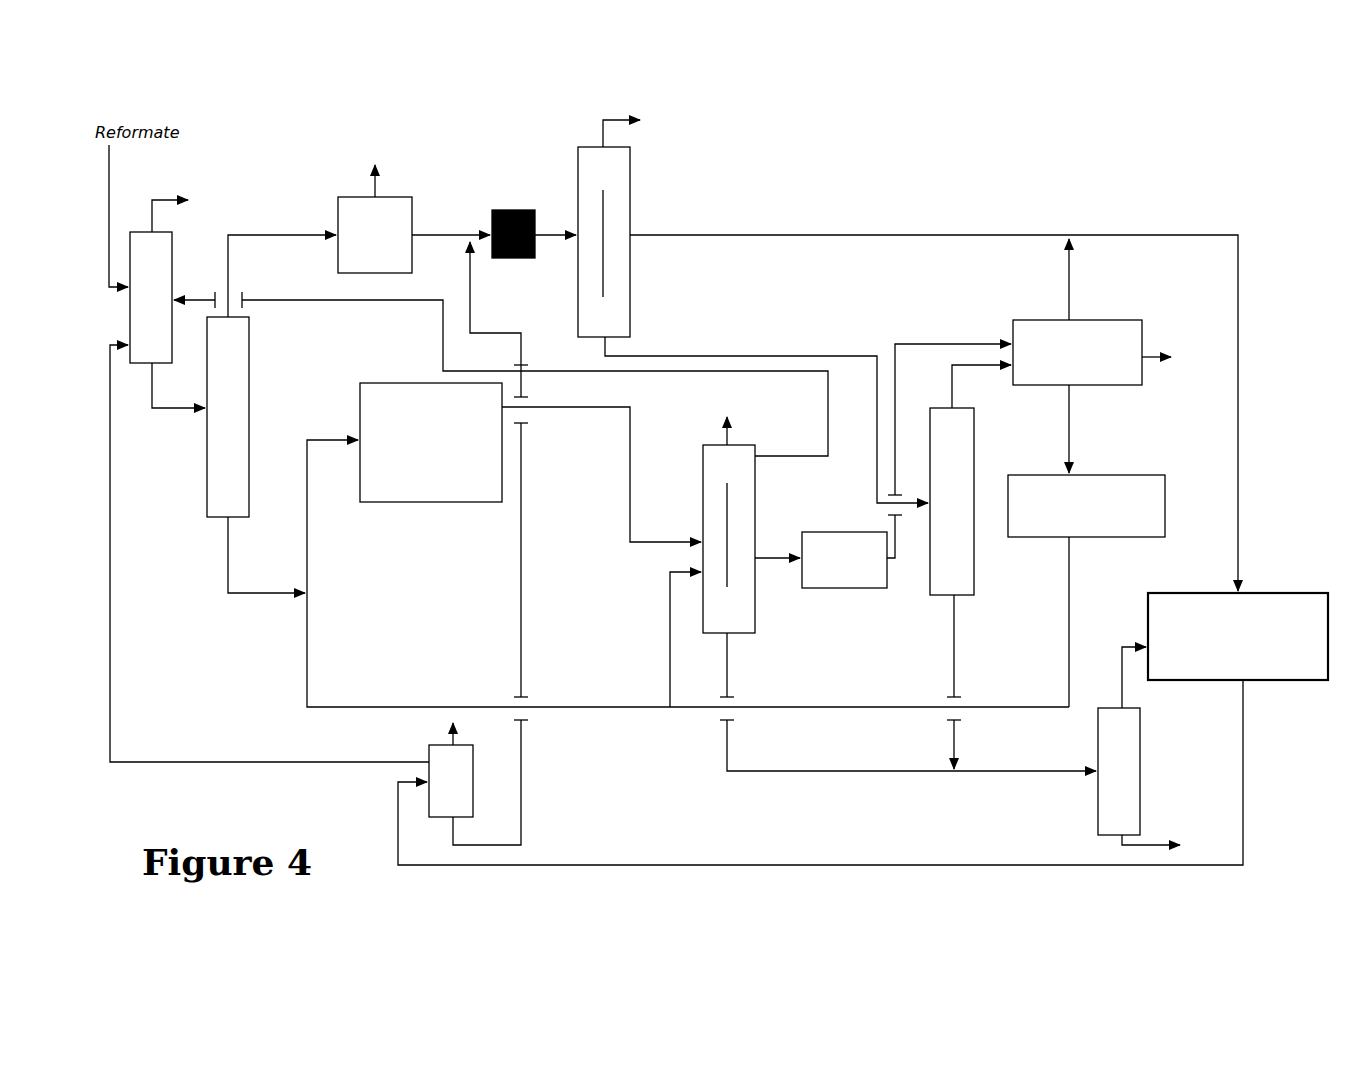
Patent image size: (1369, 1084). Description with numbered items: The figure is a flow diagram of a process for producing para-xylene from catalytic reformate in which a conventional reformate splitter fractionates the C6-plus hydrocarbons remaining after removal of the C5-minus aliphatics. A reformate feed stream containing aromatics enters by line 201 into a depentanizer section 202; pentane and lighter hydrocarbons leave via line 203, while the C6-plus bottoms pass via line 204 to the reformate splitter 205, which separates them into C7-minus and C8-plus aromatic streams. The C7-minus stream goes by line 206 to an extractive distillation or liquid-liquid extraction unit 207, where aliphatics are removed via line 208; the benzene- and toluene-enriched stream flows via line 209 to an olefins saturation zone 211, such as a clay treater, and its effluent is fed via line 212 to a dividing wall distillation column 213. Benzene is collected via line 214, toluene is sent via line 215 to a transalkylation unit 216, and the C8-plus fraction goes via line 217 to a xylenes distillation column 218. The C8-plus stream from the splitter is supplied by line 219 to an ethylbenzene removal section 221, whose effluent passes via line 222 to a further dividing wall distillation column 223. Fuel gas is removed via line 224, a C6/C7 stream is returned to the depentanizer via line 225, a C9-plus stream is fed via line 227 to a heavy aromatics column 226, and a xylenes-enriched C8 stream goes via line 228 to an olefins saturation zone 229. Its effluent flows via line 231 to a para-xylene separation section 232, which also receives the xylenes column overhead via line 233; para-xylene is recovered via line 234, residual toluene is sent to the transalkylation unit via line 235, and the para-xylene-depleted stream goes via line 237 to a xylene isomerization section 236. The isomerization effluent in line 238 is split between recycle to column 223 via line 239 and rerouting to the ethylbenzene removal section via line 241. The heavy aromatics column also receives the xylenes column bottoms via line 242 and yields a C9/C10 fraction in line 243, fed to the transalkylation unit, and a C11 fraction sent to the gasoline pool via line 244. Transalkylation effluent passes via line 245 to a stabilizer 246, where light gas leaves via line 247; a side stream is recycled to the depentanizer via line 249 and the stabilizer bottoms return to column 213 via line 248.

The line 201 is at (127, 216).
The depentanizer section 202 is at (145, 283).
The line 203 is at (170, 204).
The line 204 is at (178, 398).
The reformate splitter 205 is at (249, 358).
The line 206 is at (282, 266).
The extractive distillation or liquid-liquid extraction unit 207 is at (340, 197).
The line 208 is at (395, 181).
The line 209 is at (451, 226).
The olefins saturation zone 211 is at (492, 210).
The line 212 is at (555, 225).
The dividing wall distillation column 213 is at (623, 183).
The line 214 is at (627, 122).
The line 215 is at (934, 403).
The transalkylation unit 216 is at (1253, 593).
The line 217 is at (766, 418).
The xylenes distillation column 218 is at (972, 557).
The line 219 is at (249, 555).
The ethylbenzene removal section 221 is at (422, 493).
The line 222 is at (601, 474).
The dividing wall distillation column 223 is at (748, 598).
The line 224 is at (709, 423).
The line 225 is at (501, 374).
The heavy aromatics column 226 is at (1100, 785).
The line 227 is at (908, 702).
The line 228 is at (777, 570).
The olefins saturation zone 229 is at (830, 532).
The line 231 is at (949, 440).
The para-xylene separation section 232 is at (1107, 320).
The line 233 is at (981, 386).
The line 234 is at (1173, 358).
The line 235 is at (1047, 279).
The xylene isomerization section 236 is at (1133, 475).
The line 237 is at (1087, 429).
The line 238 is at (1087, 622).
The line 239 is at (666, 639).
The line 241 is at (688, 573).
The line 242 is at (969, 682).
The line 243 is at (1127, 668).
The line 244 is at (1151, 833).
The line 245 is at (837, 772).
The stabilizer 246 is at (462, 798).
The line 247 is at (428, 733).
The line 248 is at (503, 543).
The line 249 is at (269, 553).